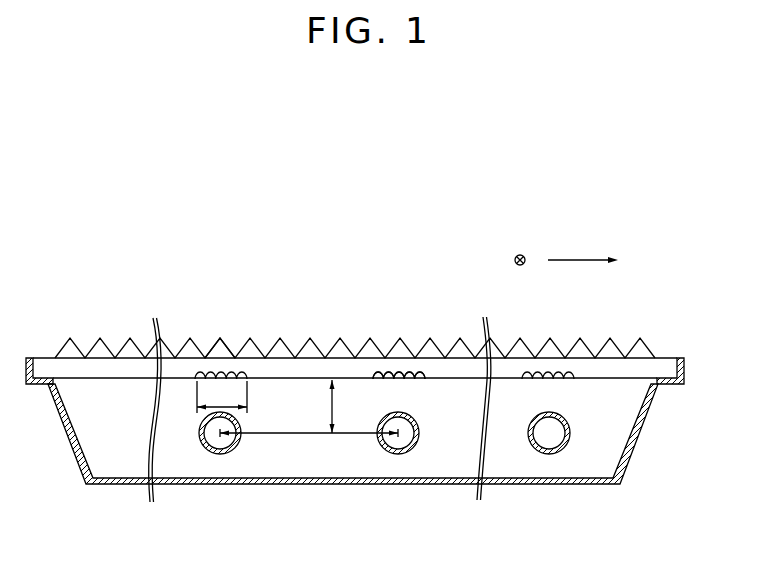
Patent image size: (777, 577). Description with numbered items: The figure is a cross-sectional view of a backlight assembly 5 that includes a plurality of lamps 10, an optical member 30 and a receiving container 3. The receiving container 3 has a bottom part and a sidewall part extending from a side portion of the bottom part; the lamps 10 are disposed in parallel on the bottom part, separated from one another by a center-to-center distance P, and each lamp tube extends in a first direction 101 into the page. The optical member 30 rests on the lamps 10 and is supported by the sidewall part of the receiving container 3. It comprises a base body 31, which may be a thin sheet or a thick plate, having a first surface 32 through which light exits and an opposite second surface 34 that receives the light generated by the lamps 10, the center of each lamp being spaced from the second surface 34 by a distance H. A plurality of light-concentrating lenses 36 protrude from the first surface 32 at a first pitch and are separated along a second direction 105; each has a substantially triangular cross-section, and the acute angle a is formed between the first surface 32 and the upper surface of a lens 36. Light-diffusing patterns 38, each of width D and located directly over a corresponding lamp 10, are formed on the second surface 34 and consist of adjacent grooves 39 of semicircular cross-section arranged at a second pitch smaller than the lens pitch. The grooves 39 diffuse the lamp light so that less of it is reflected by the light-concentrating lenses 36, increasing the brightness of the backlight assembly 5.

The backlight assembly 5 is at (339, 215).
The receiving container 3 is at (320, 485).
The lamp 10 is at (216, 455).
The optical member 30 is at (670, 349).
The base body 31 is at (367, 286).
The first surface 32 is at (323, 357).
The second surface 34 is at (352, 378).
The light-concentrating lens 36 is at (257, 345).
The light-diffusing pattern 38 is at (425, 382).
The groove 39 is at (398, 372).
The acute angle a is at (220, 337).
The first direction 101 is at (520, 246).
The second direction 105 is at (604, 260).
The width of light-diffusing pattern D is at (222, 397).
The distance between lamp center and second surface H is at (342, 406).
The center-to-center distance P is at (309, 422).